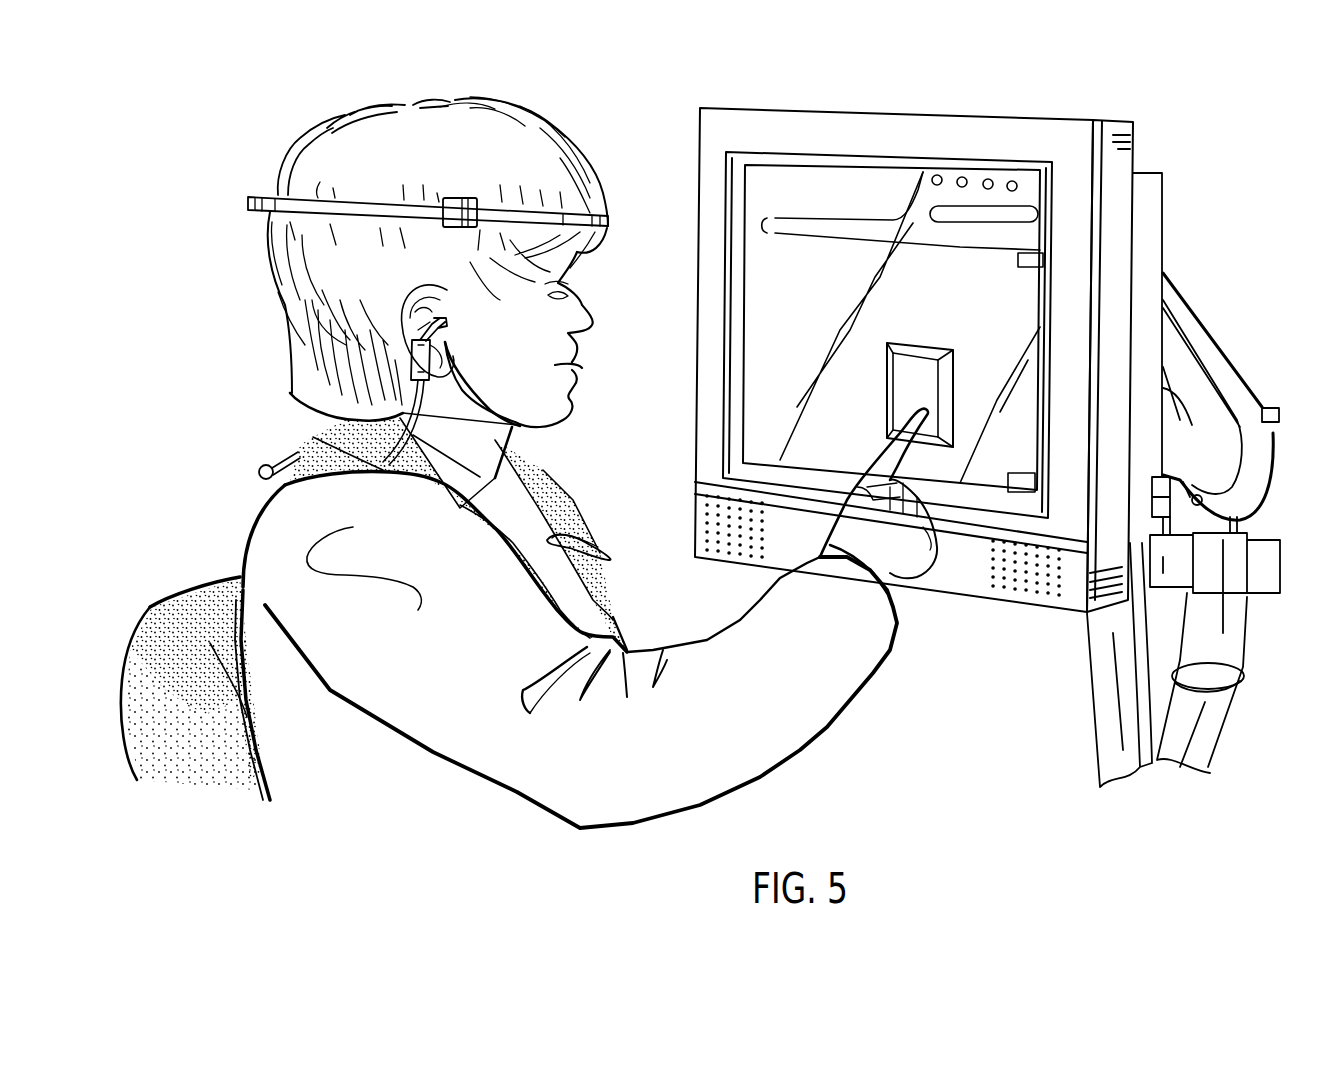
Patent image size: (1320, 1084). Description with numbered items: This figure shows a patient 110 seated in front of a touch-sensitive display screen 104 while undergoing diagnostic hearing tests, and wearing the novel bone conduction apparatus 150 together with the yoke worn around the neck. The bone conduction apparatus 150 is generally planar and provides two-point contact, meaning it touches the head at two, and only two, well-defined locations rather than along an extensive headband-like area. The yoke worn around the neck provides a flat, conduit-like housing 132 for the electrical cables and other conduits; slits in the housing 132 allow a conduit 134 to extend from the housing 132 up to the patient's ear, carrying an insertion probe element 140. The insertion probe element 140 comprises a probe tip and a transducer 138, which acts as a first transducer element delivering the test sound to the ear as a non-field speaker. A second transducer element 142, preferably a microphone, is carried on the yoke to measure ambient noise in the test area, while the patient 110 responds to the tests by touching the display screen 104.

The display screen 104 is at (897, 188).
The patient 110 is at (547, 132).
The housing 132 is at (605, 615).
The conduit 134 is at (327, 403).
The transducer 138 is at (413, 363).
The insertion probe element 140 is at (400, 327).
The second transducer element 142 is at (257, 468).
The bone conduction apparatus 150 is at (263, 197).